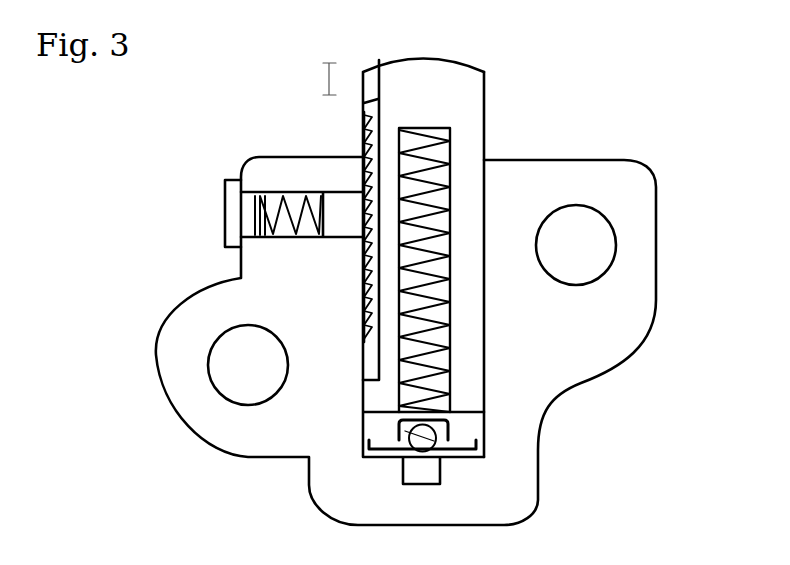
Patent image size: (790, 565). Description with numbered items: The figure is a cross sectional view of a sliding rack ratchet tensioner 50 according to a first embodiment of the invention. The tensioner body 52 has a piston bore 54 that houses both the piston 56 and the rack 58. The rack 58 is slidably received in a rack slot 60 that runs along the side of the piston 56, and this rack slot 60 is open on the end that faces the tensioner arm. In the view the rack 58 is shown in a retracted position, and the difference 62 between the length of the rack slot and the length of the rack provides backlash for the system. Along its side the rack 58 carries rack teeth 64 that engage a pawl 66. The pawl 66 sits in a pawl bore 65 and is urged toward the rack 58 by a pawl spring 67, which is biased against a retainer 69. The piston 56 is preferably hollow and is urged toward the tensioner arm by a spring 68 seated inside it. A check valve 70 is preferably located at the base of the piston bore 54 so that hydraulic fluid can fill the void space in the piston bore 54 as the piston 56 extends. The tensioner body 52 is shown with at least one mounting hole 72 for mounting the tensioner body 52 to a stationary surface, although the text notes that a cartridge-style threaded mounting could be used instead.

The sliding rack ratchet tensioner 50 is at (668, 88).
The tensioner body 52 is at (529, 336).
The piston bore 54 is at (483, 200).
The piston 56 is at (411, 110).
The rack 58 is at (373, 153).
The rack slot 60 is at (378, 345).
The difference between the length of the rack slot and the length of the rack 62 is at (313, 79).
The rack teeth 64 is at (363, 260).
The pawl bore 65 is at (297, 190).
The pawl 66 is at (329, 227).
The pawl spring 67 is at (260, 220).
The spring 68 is at (438, 352).
The retainer 69 is at (237, 207).
The check valve 70 is at (437, 457).
The mounting hole 72 is at (233, 379).